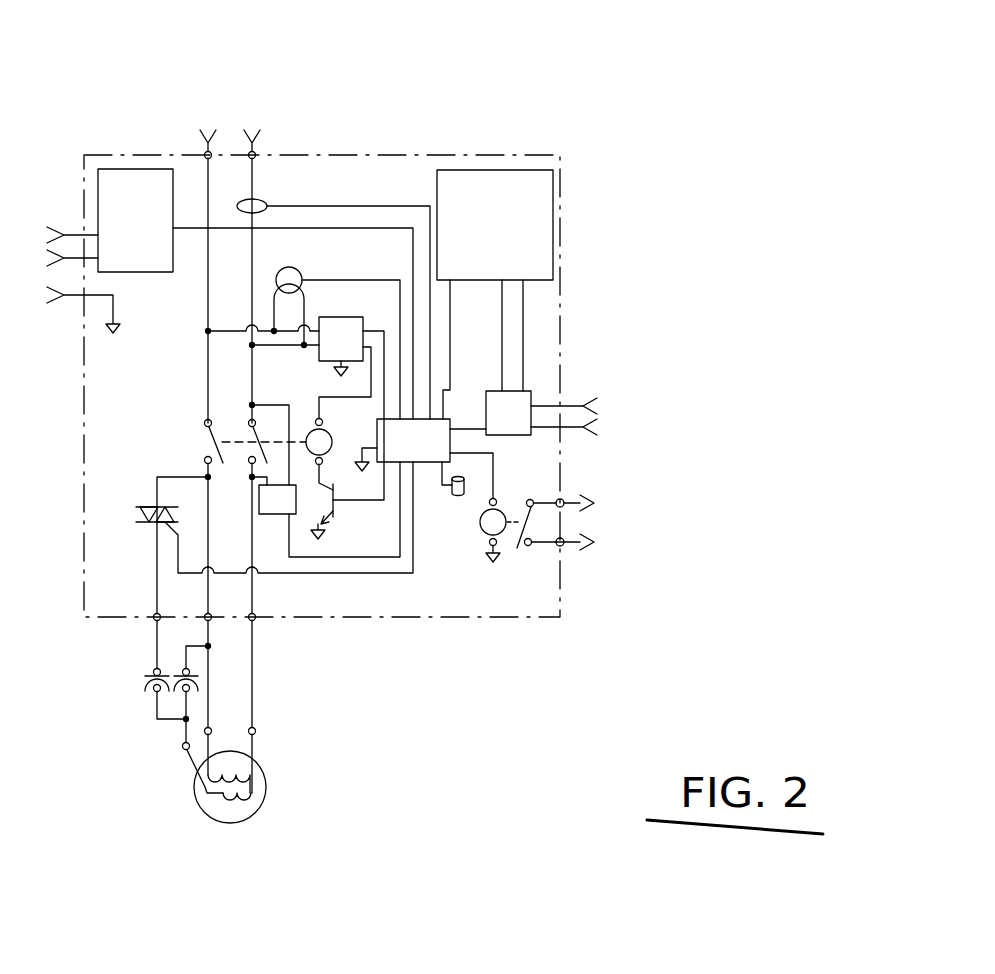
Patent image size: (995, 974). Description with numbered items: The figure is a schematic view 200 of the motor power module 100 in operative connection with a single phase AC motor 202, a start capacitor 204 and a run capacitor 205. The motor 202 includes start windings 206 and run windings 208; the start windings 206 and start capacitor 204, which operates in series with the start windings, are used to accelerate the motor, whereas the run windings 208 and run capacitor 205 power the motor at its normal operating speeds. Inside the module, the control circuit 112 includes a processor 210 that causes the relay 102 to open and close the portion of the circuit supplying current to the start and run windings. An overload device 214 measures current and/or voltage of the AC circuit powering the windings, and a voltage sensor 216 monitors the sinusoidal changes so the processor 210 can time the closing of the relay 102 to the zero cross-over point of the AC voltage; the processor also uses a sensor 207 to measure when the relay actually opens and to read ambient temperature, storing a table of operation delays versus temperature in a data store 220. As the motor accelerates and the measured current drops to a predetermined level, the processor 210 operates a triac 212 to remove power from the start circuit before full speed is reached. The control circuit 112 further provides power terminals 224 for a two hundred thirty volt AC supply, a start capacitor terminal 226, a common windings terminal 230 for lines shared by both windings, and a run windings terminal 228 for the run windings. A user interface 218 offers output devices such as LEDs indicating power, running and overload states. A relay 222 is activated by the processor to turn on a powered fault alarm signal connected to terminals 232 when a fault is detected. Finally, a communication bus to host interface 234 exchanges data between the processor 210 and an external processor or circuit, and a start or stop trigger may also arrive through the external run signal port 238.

The motor power module 100 is at (562, 160).
The relay 102 is at (176, 439).
The control circuit 112 is at (435, 346).
The schematic view 200 is at (435, 449).
The single phase AC motor 202 is at (278, 779).
The start capacitor 204 is at (150, 707).
The run capacitor 205 is at (179, 660).
The start windings 206 is at (240, 802).
The sensor 207 is at (295, 514).
The run windings 208 is at (233, 773).
The processor 210 is at (426, 468).
The triac 212 is at (137, 543).
The overload device 214 is at (254, 203).
The voltage sensor 216 is at (298, 269).
The user interface 218 is at (542, 257).
The data store 220 is at (457, 497).
The relay 222 is at (522, 566).
The power terminals 224 is at (182, 137).
The start capacitor terminal 226 is at (154, 620).
The run windings terminal 228 is at (211, 613).
The common windings terminal 230 is at (256, 612).
The terminals 232 is at (568, 479).
The communication bus to host interface 234 is at (140, 264).
The external run signal port 238 is at (579, 391).